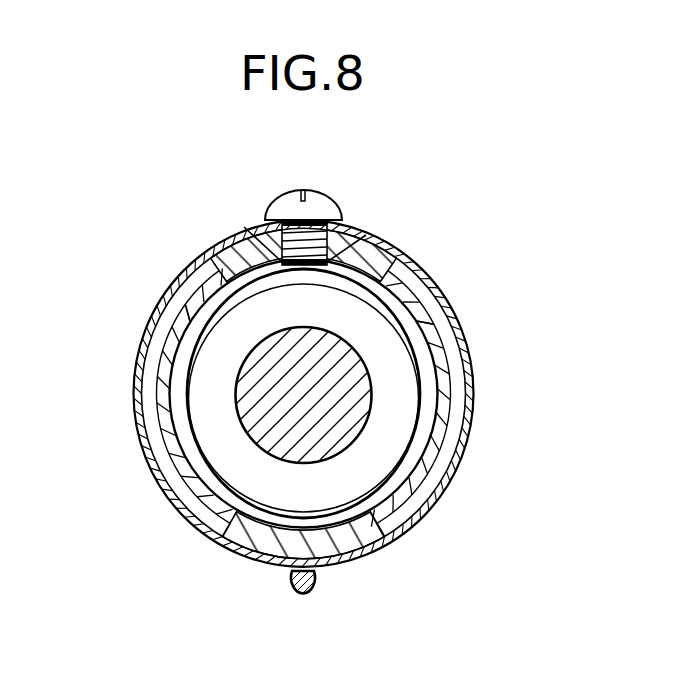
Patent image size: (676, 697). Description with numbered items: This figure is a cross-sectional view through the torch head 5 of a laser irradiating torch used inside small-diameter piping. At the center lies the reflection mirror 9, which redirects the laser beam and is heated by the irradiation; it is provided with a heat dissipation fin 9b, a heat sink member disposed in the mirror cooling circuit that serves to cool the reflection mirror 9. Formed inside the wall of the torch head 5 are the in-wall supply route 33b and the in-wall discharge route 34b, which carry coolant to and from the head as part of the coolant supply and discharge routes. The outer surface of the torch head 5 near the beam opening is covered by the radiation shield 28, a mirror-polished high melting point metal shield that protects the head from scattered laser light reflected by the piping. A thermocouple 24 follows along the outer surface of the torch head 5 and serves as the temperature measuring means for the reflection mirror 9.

The torch head 5 is at (472, 314).
The radiation shield 28 is at (406, 251).
The reflection mirror 9 is at (352, 430).
The heat dissipation fin 9b is at (212, 425).
The in-wall supply route 33b is at (425, 498).
The in-wall discharge route 34b is at (177, 497).
The thermocouple 24 is at (318, 586).